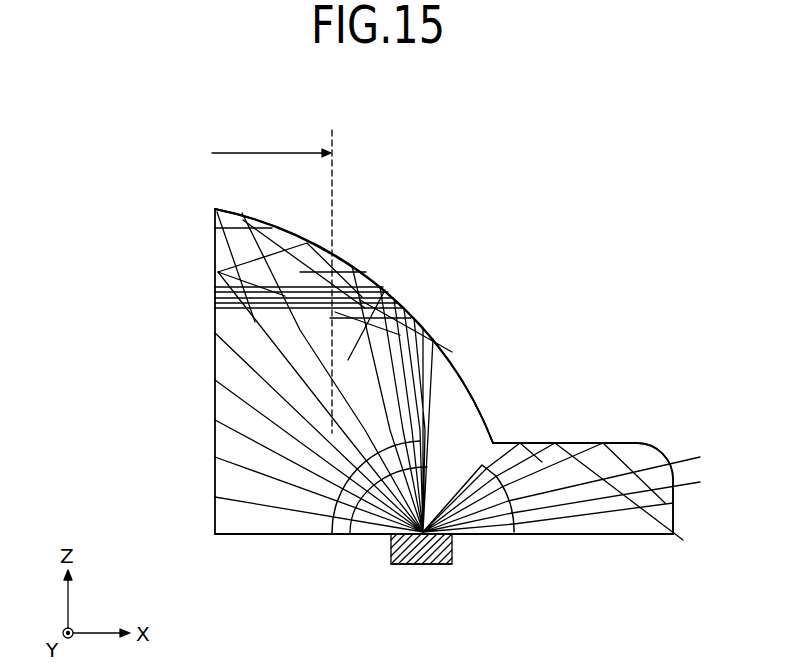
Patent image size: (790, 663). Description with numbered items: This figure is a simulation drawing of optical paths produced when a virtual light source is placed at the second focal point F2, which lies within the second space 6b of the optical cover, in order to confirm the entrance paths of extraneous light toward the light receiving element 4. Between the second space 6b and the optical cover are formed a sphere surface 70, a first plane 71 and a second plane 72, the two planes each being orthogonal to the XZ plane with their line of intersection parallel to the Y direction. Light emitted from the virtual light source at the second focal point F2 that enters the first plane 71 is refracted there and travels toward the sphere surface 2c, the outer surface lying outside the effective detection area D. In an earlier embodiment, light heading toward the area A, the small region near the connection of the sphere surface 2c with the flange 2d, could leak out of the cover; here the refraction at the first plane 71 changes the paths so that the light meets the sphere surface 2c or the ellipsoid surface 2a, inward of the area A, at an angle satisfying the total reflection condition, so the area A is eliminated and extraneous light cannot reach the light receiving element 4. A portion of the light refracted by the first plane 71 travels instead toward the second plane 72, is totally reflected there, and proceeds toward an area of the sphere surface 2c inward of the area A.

The ellipsoid surface 2a is at (263, 225).
The sphere surface 2c is at (432, 321).
The flange 2d is at (602, 460).
The area A is at (496, 411).
The effective detection area D is at (272, 279).
The sphere surface 70 is at (278, 535).
The second plane 72 is at (338, 522).
The first plane 71 is at (474, 535).
The second space 6b is at (400, 520).
The light receiving element 4 is at (443, 565).
The second focal point F2 is at (410, 565).